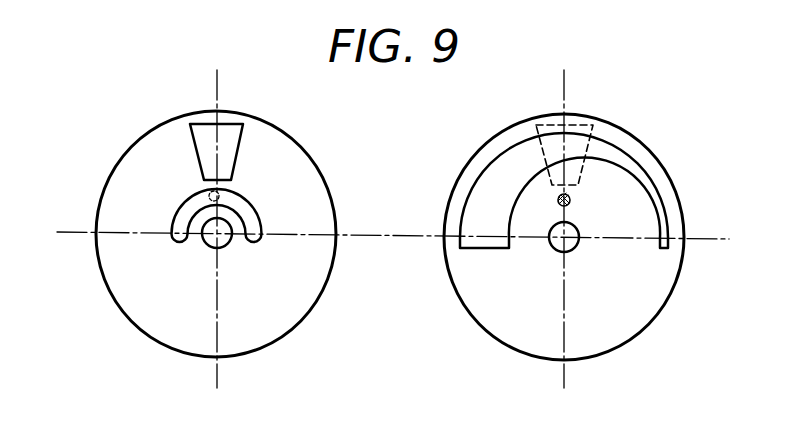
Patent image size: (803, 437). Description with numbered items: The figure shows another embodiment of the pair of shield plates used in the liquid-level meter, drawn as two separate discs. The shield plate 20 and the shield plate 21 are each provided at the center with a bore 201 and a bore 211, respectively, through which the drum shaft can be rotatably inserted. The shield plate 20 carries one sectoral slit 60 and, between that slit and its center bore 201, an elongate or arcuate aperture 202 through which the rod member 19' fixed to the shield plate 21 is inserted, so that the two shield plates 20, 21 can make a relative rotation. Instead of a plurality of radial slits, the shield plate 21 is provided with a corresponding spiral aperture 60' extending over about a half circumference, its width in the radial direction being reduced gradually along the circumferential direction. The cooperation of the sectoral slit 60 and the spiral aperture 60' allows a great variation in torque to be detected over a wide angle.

The rod member 19' is at (417, 162).
The shield plate 20 is at (143, 302).
The bore 201 is at (227, 245).
The arcuate aperture 202 is at (181, 210).
The shield plate 21 is at (528, 333).
The bore 211 is at (573, 250).
The sectoral slit 60 is at (411, 131).
The spiral aperture 60' is at (585, 175).